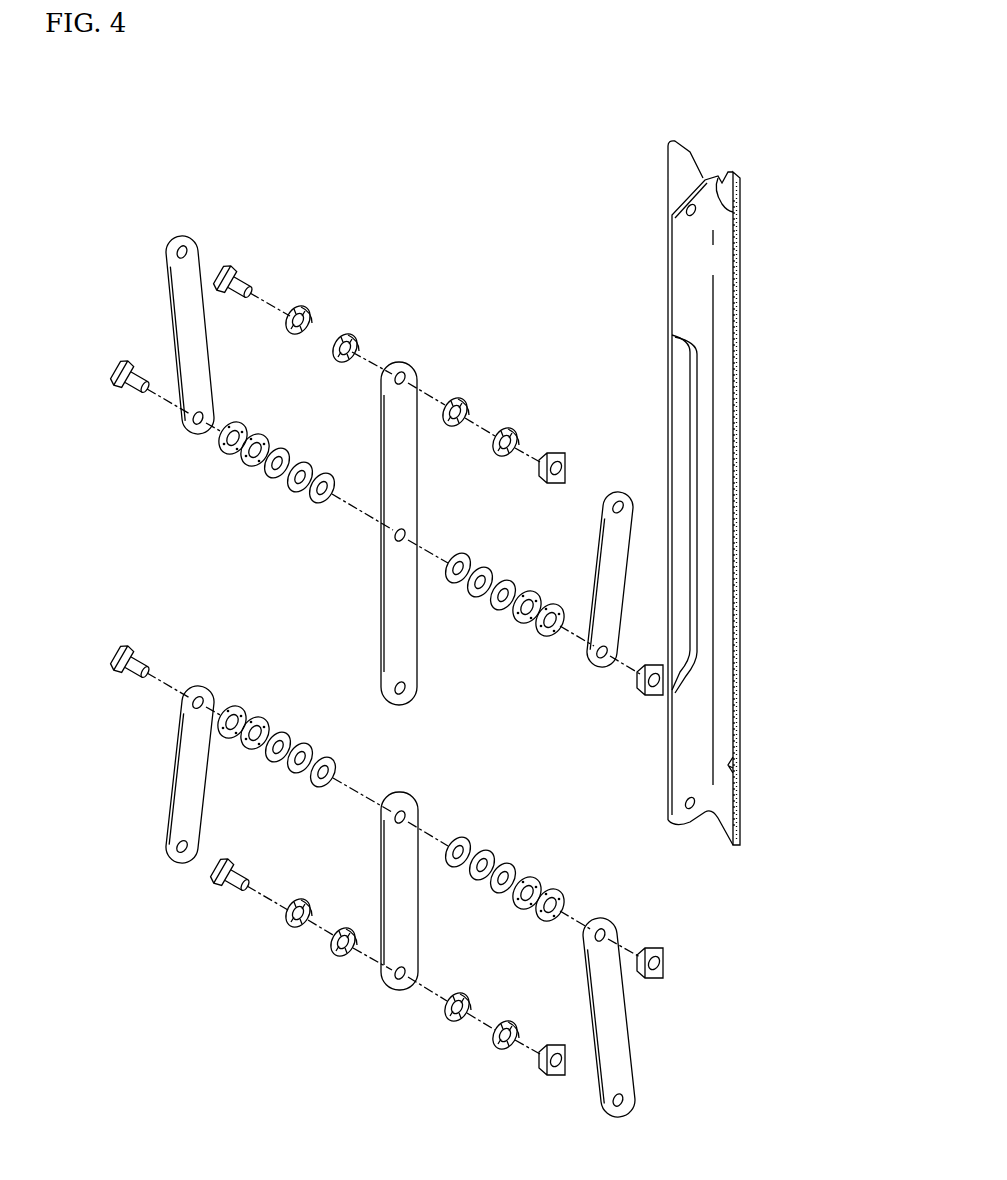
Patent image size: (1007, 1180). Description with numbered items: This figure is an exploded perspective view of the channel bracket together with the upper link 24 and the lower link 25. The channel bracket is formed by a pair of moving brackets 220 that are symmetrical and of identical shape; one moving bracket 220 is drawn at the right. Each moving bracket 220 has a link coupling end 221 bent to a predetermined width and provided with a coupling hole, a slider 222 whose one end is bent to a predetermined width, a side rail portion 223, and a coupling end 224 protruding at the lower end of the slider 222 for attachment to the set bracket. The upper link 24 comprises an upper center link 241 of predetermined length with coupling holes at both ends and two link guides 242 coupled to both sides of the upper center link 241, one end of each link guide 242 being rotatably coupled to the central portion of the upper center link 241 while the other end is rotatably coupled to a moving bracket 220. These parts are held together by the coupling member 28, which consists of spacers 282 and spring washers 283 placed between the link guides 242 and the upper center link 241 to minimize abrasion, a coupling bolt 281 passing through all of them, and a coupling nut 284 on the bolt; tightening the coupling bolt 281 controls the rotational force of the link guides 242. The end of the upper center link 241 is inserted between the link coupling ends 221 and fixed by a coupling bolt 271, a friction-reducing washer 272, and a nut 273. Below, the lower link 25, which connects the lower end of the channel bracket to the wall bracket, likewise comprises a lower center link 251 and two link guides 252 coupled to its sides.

The upper link 24 is at (411, 588).
The lower link 25 is at (365, 890).
The coupling member 28 is at (348, 671).
The moving bracket 220 is at (701, 463).
The link coupling end 221 is at (690, 267).
The slider 222 is at (719, 176).
The bracket side rail 223 is at (740, 600).
The coupling end 224 is at (735, 768).
The upper center link 241 is at (410, 490).
The link guide 242 is at (190, 278).
The lower center link 251 is at (403, 932).
The link guide 252 is at (180, 805).
The coupling bolt 271 is at (238, 268).
The washer 272 is at (350, 335).
The nut 273 is at (543, 450).
The coupling bolt 281 is at (135, 393).
The spacer 282 is at (250, 472).
The spring washer 283 is at (295, 497).
The coupling nut 284 is at (635, 695).